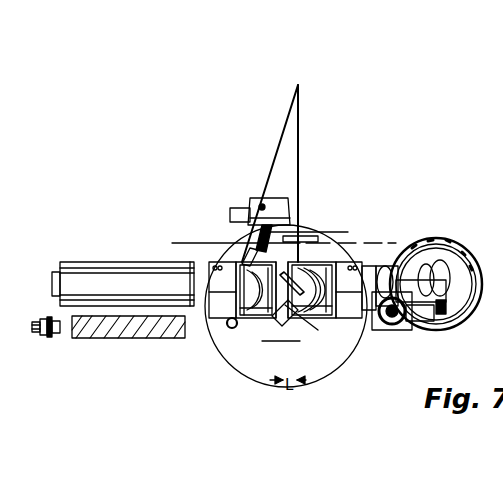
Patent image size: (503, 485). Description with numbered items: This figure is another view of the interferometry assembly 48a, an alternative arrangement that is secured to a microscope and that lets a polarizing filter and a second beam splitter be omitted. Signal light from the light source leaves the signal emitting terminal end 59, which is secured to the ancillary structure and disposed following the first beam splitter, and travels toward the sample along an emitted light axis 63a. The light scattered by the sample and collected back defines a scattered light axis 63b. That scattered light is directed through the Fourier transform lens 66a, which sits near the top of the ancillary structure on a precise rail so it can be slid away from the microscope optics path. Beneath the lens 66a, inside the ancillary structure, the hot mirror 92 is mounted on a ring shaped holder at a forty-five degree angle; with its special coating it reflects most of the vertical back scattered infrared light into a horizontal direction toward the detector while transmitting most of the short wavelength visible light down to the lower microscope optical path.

The interferometry assembly 48a is at (212, 218).
The signal emitting terminal end 59 is at (250, 198).
The emitted light axis 63a is at (283, 137).
The scattered light axis 63b is at (300, 118).
The Fourier transform lens 66a is at (312, 214).
The hot mirror 92 is at (283, 302).